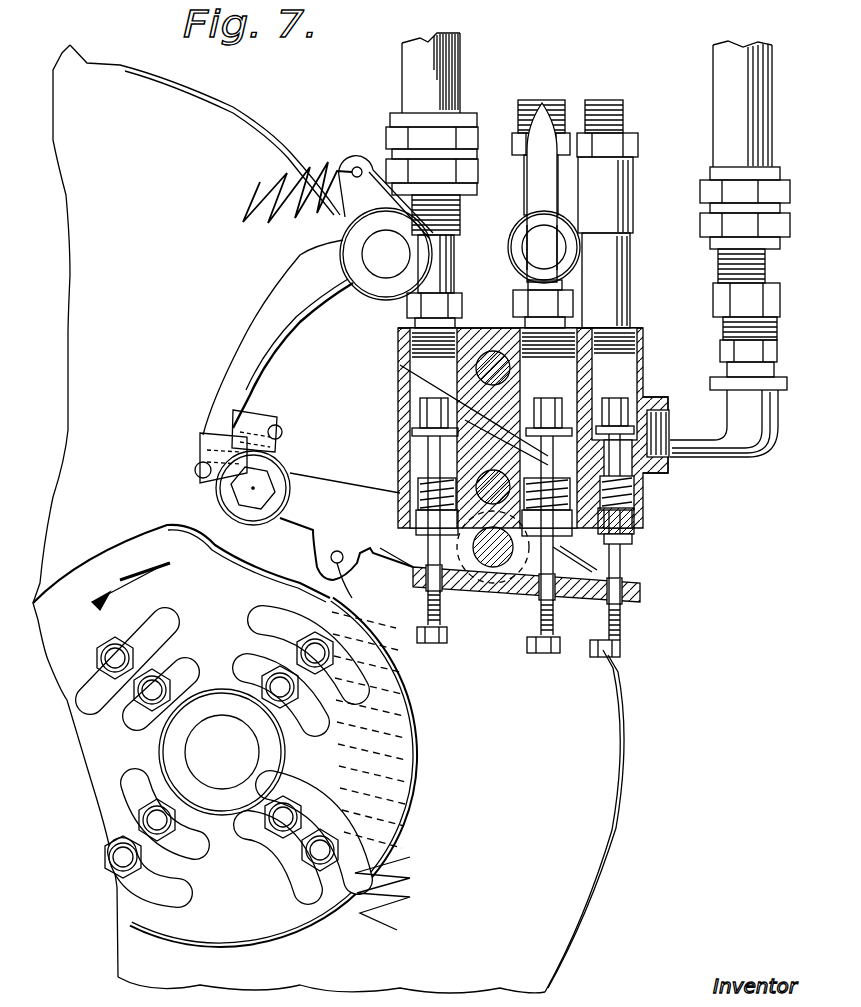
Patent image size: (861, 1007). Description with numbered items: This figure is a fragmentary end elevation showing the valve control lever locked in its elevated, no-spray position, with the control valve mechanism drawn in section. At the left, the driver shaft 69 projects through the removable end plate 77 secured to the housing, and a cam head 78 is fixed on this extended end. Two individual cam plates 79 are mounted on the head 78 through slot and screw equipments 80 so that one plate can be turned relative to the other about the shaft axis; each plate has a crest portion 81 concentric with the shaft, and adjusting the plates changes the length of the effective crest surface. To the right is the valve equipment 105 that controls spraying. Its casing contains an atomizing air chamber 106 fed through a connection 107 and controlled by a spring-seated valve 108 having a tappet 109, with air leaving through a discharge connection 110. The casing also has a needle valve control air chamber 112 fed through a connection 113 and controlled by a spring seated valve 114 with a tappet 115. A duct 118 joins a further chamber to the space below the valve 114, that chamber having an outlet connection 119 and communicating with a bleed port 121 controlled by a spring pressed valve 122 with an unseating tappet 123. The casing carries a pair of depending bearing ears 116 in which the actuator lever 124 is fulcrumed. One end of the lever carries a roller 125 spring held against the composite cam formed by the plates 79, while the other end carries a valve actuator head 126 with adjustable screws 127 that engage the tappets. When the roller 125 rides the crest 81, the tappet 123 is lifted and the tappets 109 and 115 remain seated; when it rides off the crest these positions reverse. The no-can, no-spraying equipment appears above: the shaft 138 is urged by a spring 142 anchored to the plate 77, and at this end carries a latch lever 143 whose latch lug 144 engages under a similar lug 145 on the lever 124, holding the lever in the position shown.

The driver shaft 69 is at (222, 752).
The removable end plate 77 is at (328, 519).
The cam head 78 is at (162, 755).
The cam plates 79 is at (273, 772).
The slot and screw equipments 80 is at (256, 624).
The crest portion 81 is at (105, 562).
The valve equipment 105 is at (645, 330).
The atomizing air chamber 106 is at (645, 354).
The connection 107 is at (621, 263).
The spring-seated valve 108 is at (645, 378).
The tappet 109 is at (633, 547).
The discharge connection 110 is at (712, 418).
The needle valve control air chamber 112 is at (548, 481).
The connection 113 is at (529, 277).
The spring seated valve 114 is at (614, 484).
The tappet 115 is at (645, 513).
The depending bearing ears 116 is at (511, 592).
The duct 118 is at (400, 366).
The outlet connection 119 is at (458, 258).
The bleed port 121 is at (403, 447).
The spring pressed valve 122 is at (403, 417).
The unseating tappet 123 is at (410, 530).
The actuator lever 124 is at (360, 495).
The roller 125 is at (224, 497).
The valve actuator head 126 is at (582, 557).
The adjustable screws 127 is at (428, 644).
The shaft 138 is at (380, 254).
The spring 142 is at (260, 182).
The latch lever 143 is at (250, 322).
The latch lug 144 is at (210, 448).
The lug 145 is at (258, 420).